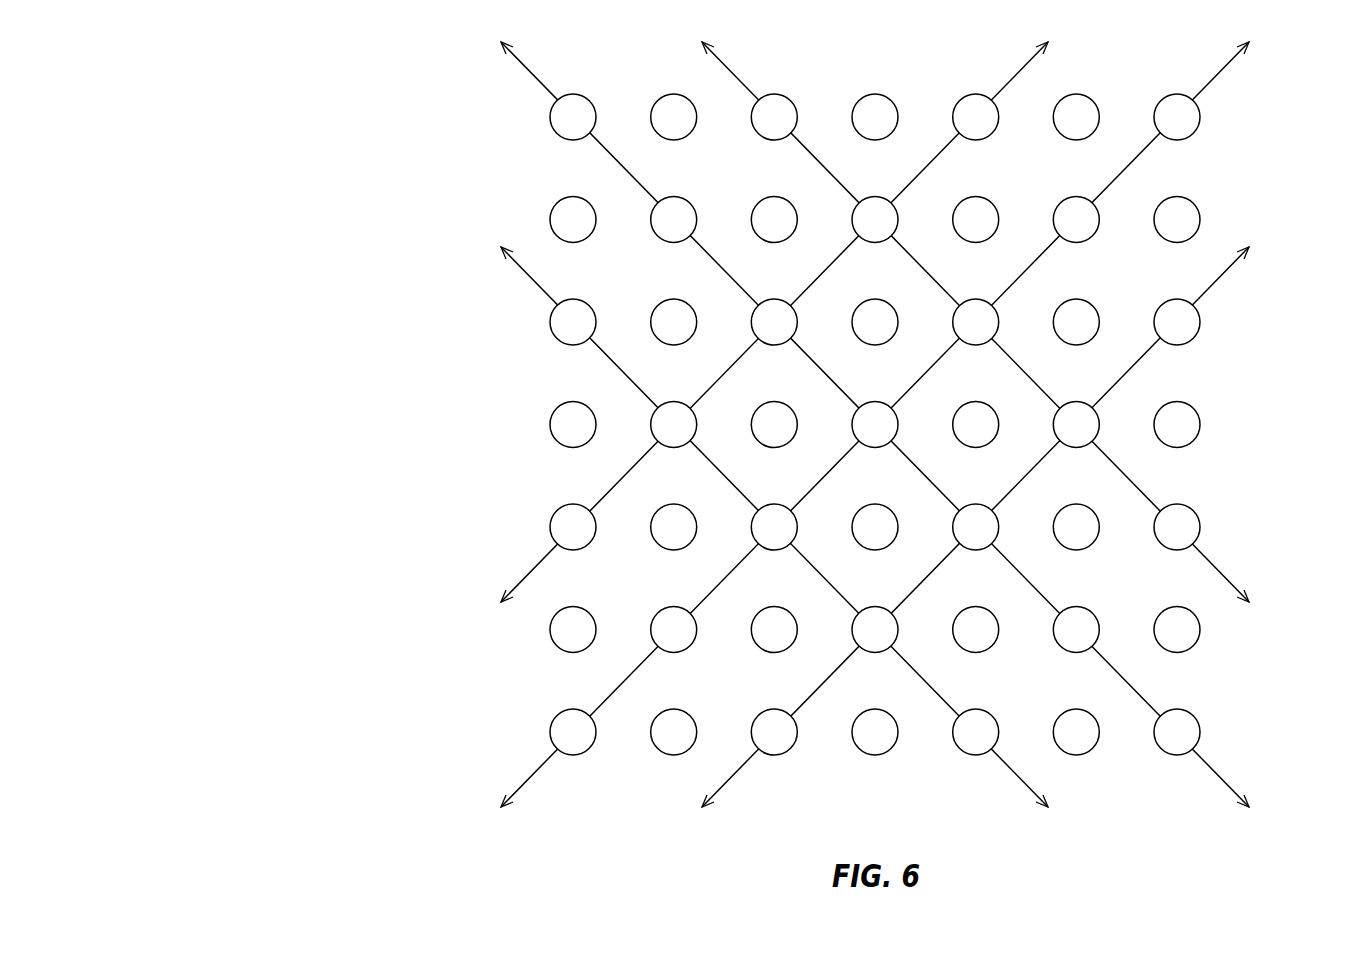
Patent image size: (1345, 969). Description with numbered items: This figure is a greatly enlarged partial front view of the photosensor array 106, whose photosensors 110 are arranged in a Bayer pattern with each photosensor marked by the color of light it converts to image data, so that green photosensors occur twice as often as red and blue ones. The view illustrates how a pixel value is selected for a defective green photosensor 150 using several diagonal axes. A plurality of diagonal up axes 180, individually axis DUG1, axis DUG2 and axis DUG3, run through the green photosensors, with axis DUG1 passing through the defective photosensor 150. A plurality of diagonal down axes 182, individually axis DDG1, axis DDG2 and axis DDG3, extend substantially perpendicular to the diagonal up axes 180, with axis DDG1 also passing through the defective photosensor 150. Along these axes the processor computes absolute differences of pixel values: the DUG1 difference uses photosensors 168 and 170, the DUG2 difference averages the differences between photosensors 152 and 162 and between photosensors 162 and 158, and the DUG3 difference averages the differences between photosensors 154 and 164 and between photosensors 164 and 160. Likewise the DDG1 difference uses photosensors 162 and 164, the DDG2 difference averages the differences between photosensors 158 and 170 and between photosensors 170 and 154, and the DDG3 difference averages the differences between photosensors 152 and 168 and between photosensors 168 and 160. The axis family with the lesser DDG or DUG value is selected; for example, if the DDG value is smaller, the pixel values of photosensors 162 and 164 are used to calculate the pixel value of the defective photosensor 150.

The photosensor array 106 is at (352, 138).
The photosensors 110 is at (875, 94).
The defective photosensor 150 is at (897, 412).
The photosensor 152 is at (669, 402).
The photosensor 154 is at (1070, 402).
The photosensor 158 is at (896, 208).
The photosensor 160 is at (897, 617).
The photosensor 162 is at (769, 300).
The photosensor 164 is at (970, 505).
The photosensor 168 is at (769, 505).
The photosensor 170 is at (970, 300).
The diagonal up axes 180 is at (1232, 61).
The diagonal down axes 182 is at (530, 73).
The axis DDG1 is at (622, 166).
The axis DDG2 is at (739, 80).
The axis DDG3 is at (528, 275).
The axis DUG1 is at (1126, 169).
The axis DUG2 is at (1011, 81).
The axis DUG3 is at (1222, 278).